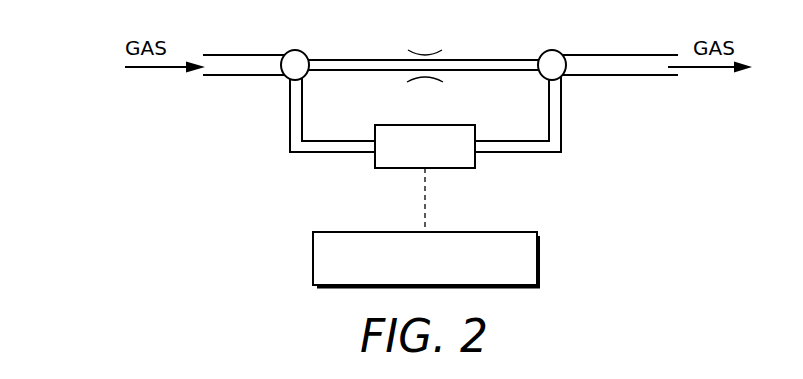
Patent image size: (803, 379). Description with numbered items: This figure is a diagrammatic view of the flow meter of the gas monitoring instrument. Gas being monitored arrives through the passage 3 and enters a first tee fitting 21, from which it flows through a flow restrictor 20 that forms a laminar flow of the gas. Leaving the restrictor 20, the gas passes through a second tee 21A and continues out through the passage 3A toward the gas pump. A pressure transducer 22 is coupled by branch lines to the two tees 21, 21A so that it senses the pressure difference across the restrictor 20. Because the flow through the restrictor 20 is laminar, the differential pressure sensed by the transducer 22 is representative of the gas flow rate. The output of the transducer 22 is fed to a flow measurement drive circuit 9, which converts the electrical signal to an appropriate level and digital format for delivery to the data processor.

The passage 3 is at (238, 55).
The passage 3A is at (622, 55).
The flow restrictor 20 is at (467, 60).
The first tee fitting 21 is at (295, 50).
The second tee 21A is at (555, 50).
The pressure transducer 22 is at (460, 125).
The flow measurement drive circuit 9 is at (520, 232).